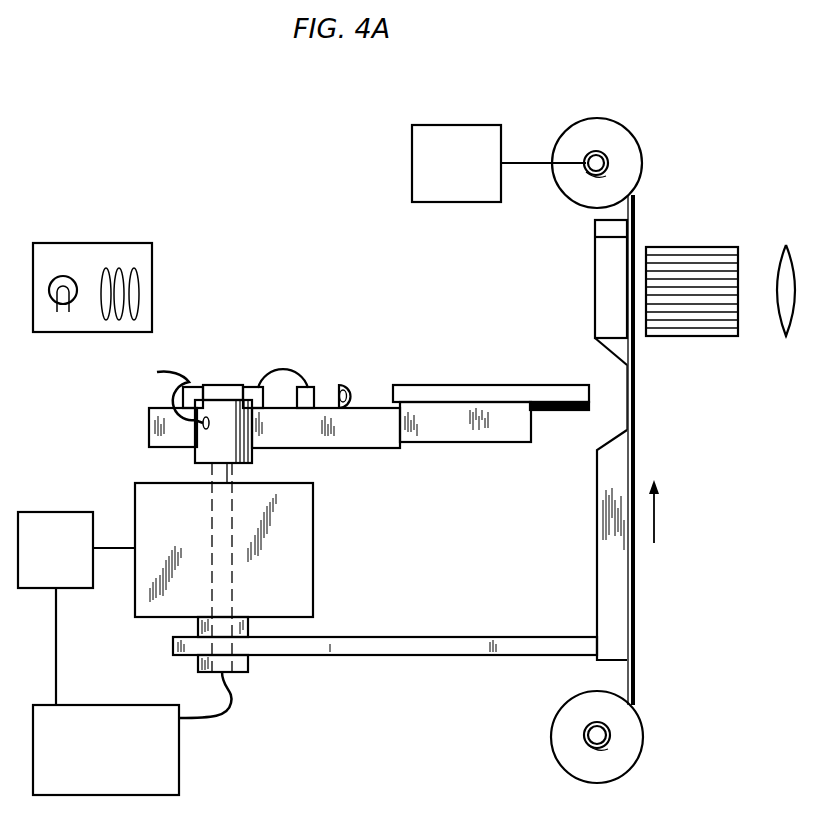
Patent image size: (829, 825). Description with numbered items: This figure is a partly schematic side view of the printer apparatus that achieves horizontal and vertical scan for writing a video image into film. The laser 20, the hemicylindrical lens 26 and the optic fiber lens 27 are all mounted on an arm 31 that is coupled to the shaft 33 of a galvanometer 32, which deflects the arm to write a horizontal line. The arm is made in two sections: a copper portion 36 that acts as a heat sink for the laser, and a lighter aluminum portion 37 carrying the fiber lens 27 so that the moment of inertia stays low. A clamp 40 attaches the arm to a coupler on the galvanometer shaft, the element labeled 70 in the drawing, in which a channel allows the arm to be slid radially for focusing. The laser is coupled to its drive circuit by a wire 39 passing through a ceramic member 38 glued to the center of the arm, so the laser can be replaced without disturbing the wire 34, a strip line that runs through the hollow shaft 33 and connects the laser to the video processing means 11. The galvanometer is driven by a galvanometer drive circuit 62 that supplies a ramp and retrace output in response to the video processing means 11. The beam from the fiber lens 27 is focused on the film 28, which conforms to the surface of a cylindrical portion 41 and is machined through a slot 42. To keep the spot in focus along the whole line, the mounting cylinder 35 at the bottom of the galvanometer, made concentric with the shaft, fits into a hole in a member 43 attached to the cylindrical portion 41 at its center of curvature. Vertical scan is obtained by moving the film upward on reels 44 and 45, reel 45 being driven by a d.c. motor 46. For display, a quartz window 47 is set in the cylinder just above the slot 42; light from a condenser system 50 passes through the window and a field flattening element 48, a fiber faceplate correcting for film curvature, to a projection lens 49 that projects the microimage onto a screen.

The video processing means 11 is at (170, 767).
The laser 20 is at (310, 388).
The hemicylindrical lens 26 is at (347, 389).
The optic fiber lens 27 is at (480, 385).
The film 28 is at (637, 400).
The arm 31 is at (124, 428).
The galvanometer 32 is at (300, 550).
The shaft 33 is at (211, 539).
The wire 34 is at (258, 711).
The cylinder 35 is at (195, 623).
The copper portion 36 is at (371, 430).
The aluminum portion 37 is at (448, 428).
The ceramic member 38 is at (192, 390).
The wire 39 is at (283, 372).
The clamp 40 is at (219, 387).
The cylindrical portion 41 is at (597, 568).
The slot 42 is at (617, 402).
The member 43 is at (430, 655).
The reel 44 is at (556, 740).
The reel 45 is at (620, 134).
The d.c. motor 46 is at (455, 128).
The quartz window 47 is at (598, 270).
The field flattening element 48 is at (687, 250).
The projection lens 49 is at (779, 265).
The condenser system 50 is at (83, 255).
The galvanometer drive circuit 62 is at (56, 520).
The mirror mount 70 is at (195, 455).